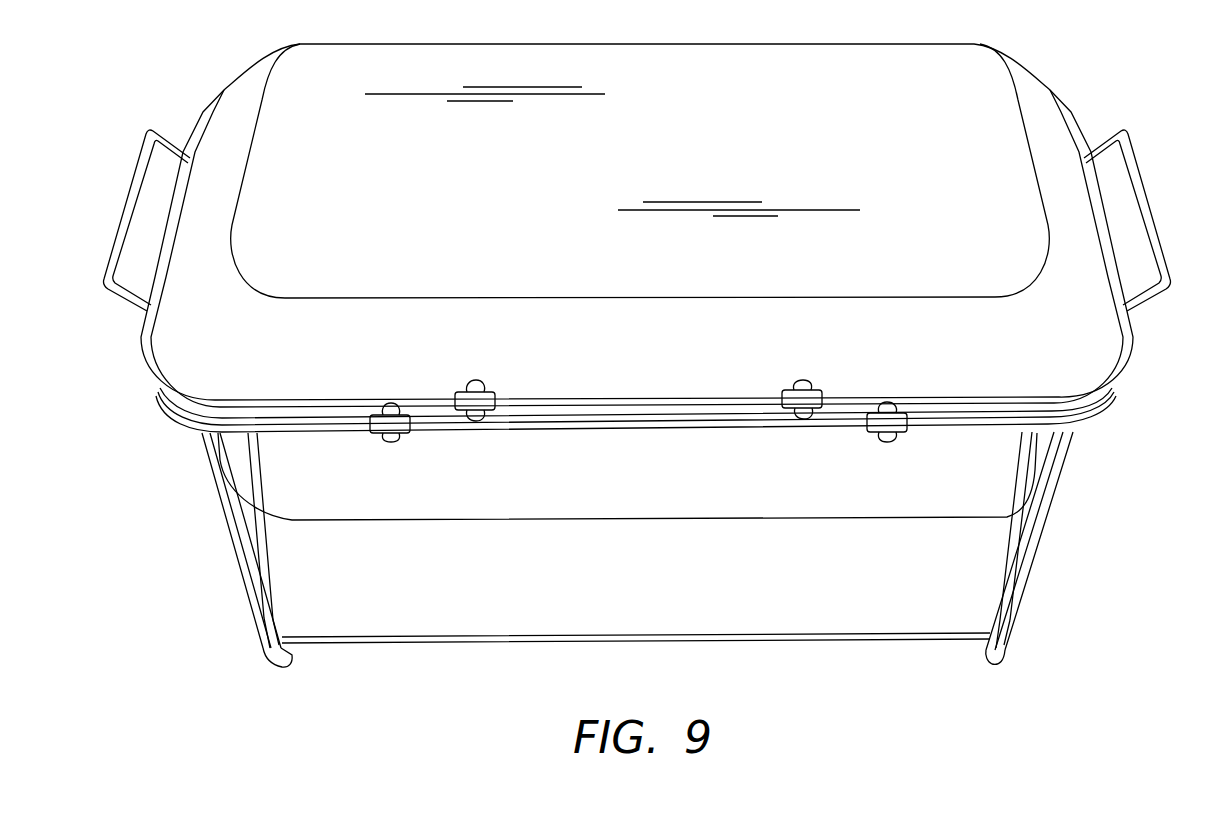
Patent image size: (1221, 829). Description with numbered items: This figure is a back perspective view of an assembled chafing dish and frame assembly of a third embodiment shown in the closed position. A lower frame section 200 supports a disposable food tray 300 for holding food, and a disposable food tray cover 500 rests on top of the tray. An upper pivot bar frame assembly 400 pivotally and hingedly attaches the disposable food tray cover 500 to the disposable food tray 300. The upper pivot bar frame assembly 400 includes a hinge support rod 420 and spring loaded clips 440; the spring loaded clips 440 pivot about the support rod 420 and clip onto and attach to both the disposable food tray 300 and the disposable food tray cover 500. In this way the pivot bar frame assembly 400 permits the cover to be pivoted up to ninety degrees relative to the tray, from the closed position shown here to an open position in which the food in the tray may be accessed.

The disposable food tray cover 500 is at (902, 151).
The disposable food tray 300 is at (902, 493).
The lower frame section 200 is at (1060, 541).
The upper pivot bar frame assembly 400 is at (611, 424).
The hinge support rod 420 is at (670, 416).
The spring loaded clips 440 is at (460, 414).